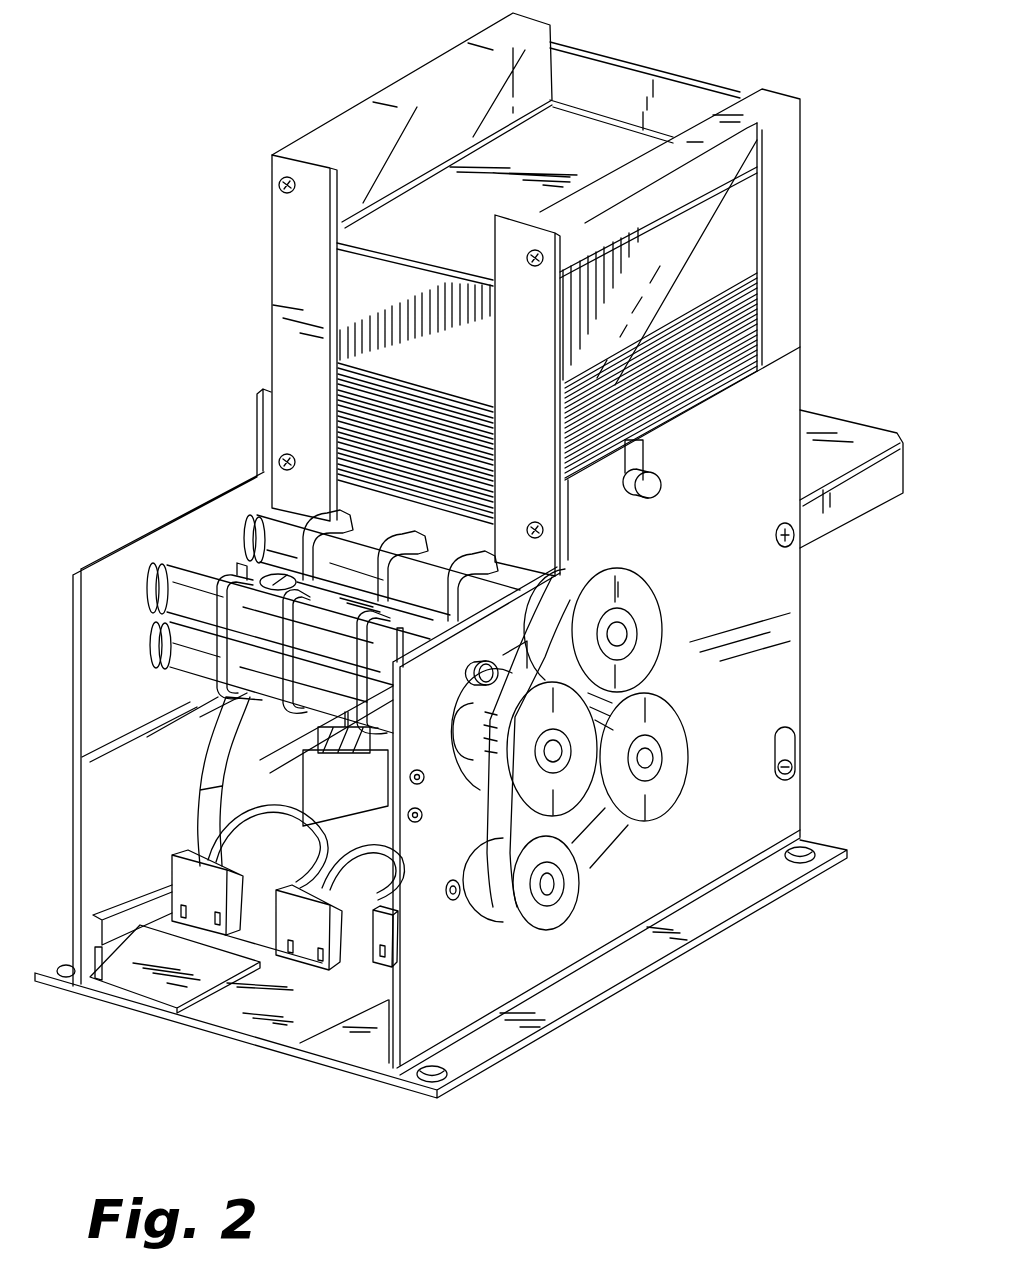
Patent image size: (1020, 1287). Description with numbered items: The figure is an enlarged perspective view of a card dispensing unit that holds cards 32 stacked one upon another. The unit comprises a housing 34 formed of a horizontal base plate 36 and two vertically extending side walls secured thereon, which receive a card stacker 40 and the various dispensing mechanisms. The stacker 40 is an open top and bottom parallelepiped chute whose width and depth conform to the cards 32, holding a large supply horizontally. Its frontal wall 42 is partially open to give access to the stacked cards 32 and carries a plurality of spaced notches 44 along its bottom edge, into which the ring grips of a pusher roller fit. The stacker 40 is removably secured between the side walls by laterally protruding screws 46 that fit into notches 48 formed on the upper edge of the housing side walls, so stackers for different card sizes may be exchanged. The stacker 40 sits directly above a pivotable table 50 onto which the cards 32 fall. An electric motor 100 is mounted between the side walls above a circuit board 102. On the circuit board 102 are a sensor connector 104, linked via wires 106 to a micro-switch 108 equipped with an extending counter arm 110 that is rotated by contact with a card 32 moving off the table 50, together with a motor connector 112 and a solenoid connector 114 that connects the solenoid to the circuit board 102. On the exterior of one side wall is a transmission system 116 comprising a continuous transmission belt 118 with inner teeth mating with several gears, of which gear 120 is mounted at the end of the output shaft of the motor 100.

The cards 32 is at (725, 287).
The housing 34 is at (183, 490).
The base plate 36 is at (468, 1042).
The card stacker 40 is at (597, 145).
The frontal wall 42 is at (293, 218).
The notches 44 is at (463, 573).
The screws 46 is at (661, 482).
The notches 48 is at (642, 447).
The pivotable table 50 is at (858, 493).
The electric motor 100 is at (228, 773).
The circuit board 102 is at (357, 967).
The sensor connector 104 is at (398, 960).
The wires 106 is at (400, 897).
The micro-switch 108 is at (340, 763).
The counter arm 110 is at (323, 727).
The motor connector 112 is at (293, 932).
The solenoid connector 114 is at (187, 897).
The transmission system 116 is at (693, 790).
The transmission belt 118 is at (664, 662).
The gear 120 is at (553, 917).